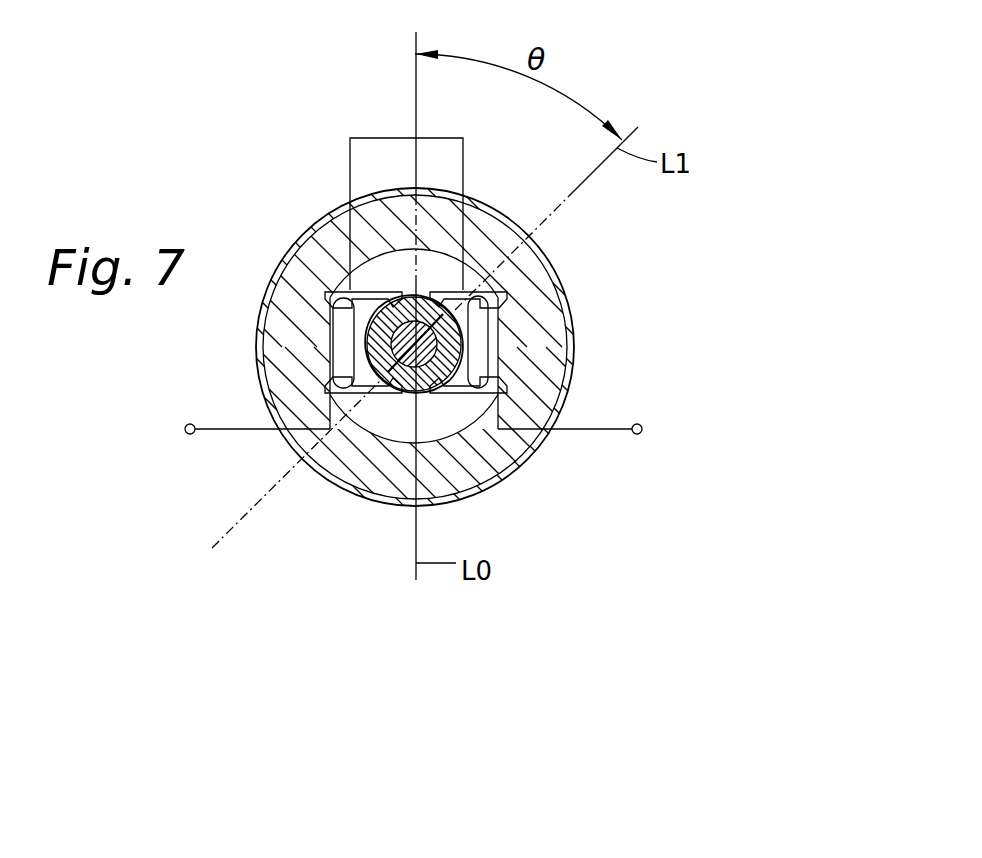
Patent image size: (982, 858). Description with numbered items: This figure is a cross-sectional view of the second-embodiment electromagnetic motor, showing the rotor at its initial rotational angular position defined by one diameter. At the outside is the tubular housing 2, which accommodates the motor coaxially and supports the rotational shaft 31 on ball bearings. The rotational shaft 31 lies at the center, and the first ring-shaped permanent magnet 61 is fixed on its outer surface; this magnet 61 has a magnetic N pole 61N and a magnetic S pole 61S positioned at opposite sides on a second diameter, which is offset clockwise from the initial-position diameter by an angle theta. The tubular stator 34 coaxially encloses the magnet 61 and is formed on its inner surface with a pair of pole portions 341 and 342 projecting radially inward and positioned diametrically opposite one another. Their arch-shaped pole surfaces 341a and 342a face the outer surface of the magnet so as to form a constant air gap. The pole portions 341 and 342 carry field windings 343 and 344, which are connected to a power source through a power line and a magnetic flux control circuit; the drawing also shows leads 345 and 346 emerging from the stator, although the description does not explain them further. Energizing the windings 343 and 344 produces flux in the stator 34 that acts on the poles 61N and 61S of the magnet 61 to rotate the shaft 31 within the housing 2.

The tubular housing 2 is at (478, 492).
The rotational shaft 31 is at (398, 347).
The tubular stator 34 is at (515, 443).
The pole portion 341 is at (301, 270).
The pole surface 341a is at (357, 290).
The pole portion 342 is at (545, 265).
The pole surface 342a is at (447, 288).
The field winding 343 is at (385, 357).
The field winding 344 is at (490, 343).
The first terminal 345 is at (184, 429).
The second terminal 346 is at (642, 429).
The first ring-shaped permanent magnet 61 is at (454, 348).
The magnetic N pole 61N is at (413, 283).
The magnetic S pole 61S is at (388, 405).